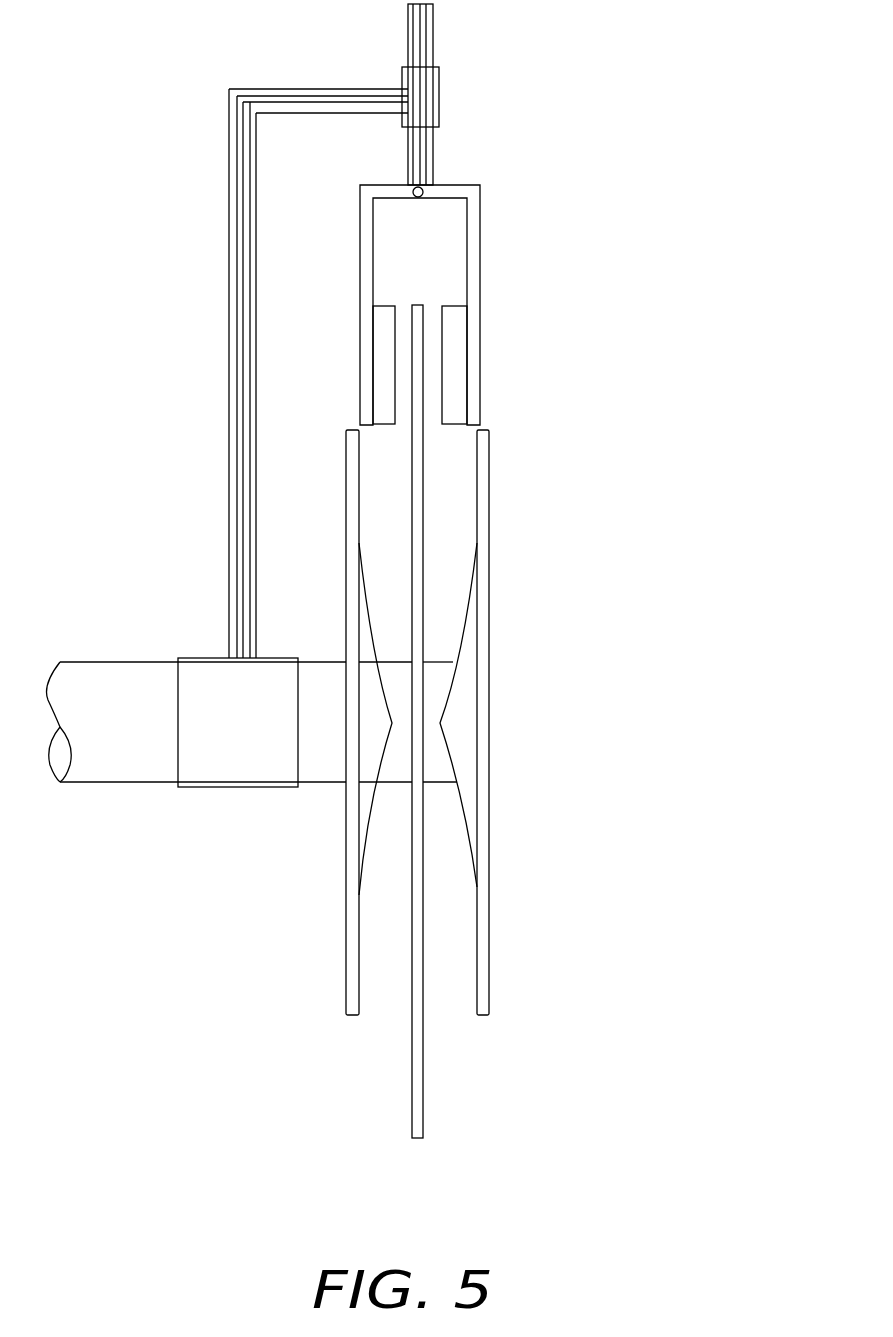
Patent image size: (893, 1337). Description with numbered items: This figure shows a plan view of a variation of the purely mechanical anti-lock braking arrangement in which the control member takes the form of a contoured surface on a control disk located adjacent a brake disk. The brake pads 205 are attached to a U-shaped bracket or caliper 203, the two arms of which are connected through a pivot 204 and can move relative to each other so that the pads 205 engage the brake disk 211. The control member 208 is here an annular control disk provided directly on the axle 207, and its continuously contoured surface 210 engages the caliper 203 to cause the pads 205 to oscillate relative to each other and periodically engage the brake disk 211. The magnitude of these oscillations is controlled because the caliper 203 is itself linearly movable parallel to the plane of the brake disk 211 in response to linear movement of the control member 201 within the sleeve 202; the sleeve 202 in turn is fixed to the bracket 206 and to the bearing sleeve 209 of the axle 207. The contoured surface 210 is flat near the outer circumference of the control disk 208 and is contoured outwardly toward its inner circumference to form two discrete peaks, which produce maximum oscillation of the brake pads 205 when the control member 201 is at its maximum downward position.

The control member 201 is at (433, 32).
The sleeve 202 is at (433, 105).
The U-shaped bracket or caliper 203 is at (473, 223).
The pivot 204 is at (418, 199).
The brake pads 205 is at (382, 343).
The bracket 206 is at (238, 192).
The axle 207 is at (115, 690).
The control member (control disk) 208 is at (489, 632).
The bearing sleeve 209 is at (273, 760).
The contoured surface 210 is at (460, 817).
The brake disk 211 is at (412, 1128).